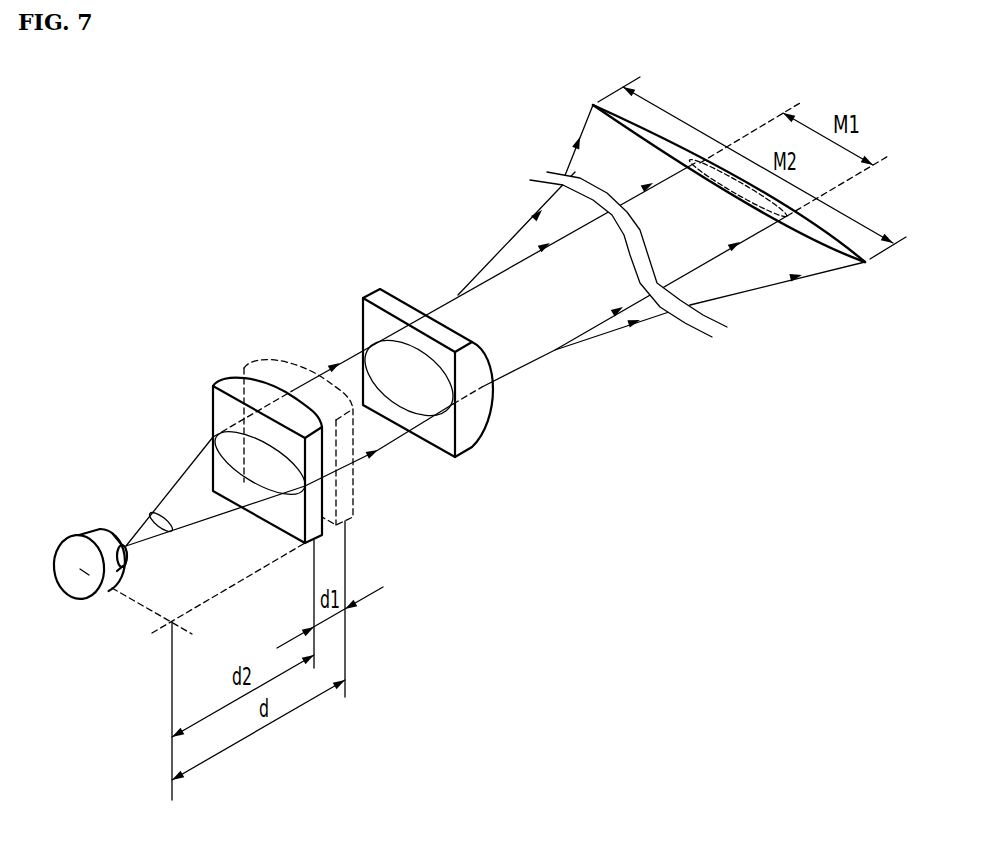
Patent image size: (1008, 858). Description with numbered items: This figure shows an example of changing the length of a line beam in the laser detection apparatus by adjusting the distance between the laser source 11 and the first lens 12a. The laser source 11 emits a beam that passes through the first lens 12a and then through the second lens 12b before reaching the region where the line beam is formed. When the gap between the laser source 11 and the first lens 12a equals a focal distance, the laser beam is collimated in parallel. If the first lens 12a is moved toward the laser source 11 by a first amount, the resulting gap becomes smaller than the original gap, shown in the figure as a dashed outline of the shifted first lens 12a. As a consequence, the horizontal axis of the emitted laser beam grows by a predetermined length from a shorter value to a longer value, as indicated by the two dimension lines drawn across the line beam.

The laser source 11 is at (80, 580).
The first lens 12a is at (227, 387).
The second lens 12b is at (378, 296).